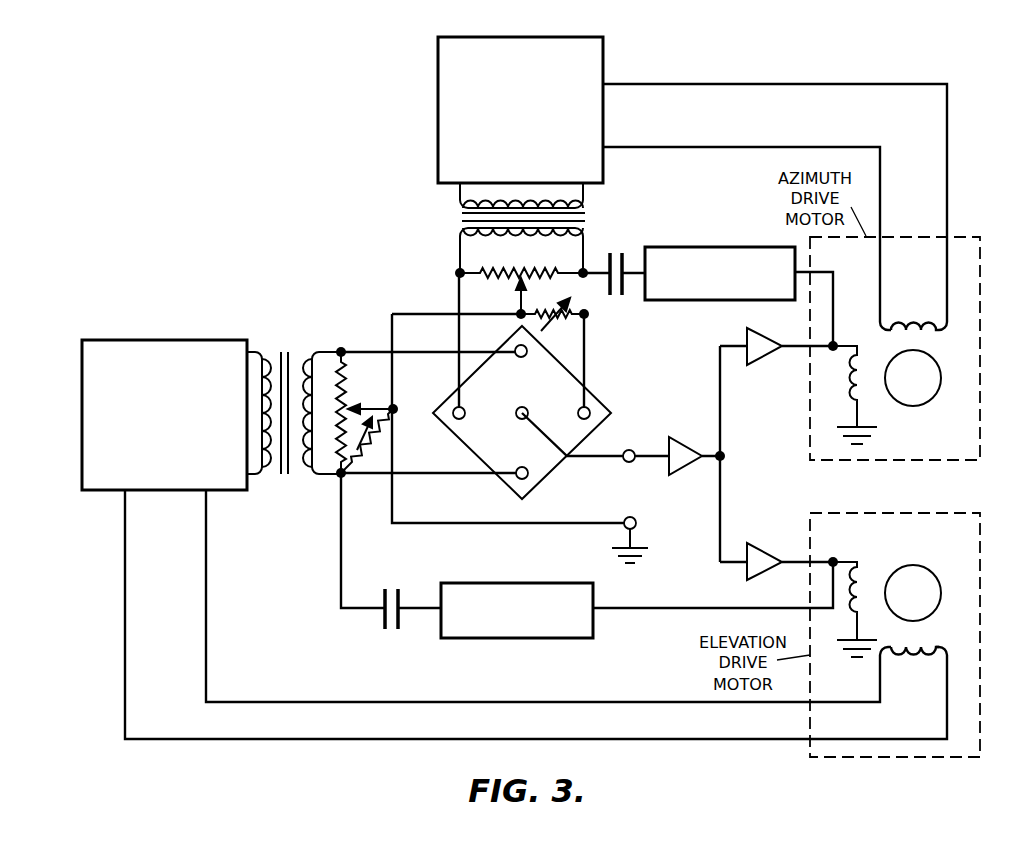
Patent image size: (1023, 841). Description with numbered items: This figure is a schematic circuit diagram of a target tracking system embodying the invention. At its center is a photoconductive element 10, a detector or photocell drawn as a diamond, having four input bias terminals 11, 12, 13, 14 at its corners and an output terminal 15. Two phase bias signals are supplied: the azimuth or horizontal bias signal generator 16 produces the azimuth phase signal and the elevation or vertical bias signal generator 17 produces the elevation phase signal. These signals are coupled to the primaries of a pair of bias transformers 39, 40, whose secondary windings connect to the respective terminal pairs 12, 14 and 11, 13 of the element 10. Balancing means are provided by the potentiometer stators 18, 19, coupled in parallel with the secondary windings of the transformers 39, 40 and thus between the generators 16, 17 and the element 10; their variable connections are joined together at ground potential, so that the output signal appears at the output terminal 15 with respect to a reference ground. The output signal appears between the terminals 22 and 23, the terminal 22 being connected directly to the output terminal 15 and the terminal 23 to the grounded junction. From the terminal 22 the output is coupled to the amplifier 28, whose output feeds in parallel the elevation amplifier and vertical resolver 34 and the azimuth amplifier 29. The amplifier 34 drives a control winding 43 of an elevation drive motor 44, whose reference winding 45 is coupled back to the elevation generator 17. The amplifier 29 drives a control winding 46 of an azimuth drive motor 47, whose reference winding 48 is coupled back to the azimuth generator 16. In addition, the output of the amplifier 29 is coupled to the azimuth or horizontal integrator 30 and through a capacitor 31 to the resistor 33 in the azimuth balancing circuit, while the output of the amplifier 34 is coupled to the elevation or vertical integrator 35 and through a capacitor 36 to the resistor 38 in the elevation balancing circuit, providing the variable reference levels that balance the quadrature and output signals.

The photoconductive element 10 is at (553, 356).
The input terminal 11 is at (514, 348).
The input terminal 12 is at (579, 409).
The input terminal 13 is at (527, 478).
The input terminal 14 is at (453, 408).
The output terminal 15 is at (517, 409).
The azimuth bias signal generator 16 is at (608, 75).
The elevation bias signal generator 17 is at (180, 338).
The potentiometer stator 18 is at (486, 272).
The potentiometer stator 19 is at (337, 432).
The terminal 22 is at (625, 462).
The terminal 23 is at (636, 518).
The amplifier 28 is at (682, 436).
The azimuth amplifier 29 is at (747, 334).
The azimuth integrator 30 is at (718, 246).
The capacitor 31 is at (626, 250).
The resistor 33 is at (575, 318).
The elevation amplifier 34 is at (758, 545).
The elevation integrator 35 is at (548, 582).
The capacitor 36 is at (402, 590).
The resistor 38 is at (360, 462).
The bias transformer 39 is at (586, 216).
The bias transformer 40 is at (284, 350).
The control winding 43 is at (860, 562).
The elevation drive motor 44 is at (934, 570).
The reference winding 45 is at (950, 652).
The control winding 46 is at (847, 383).
The azimuth drive motor 47 is at (937, 362).
The reference winding 48 is at (948, 322).